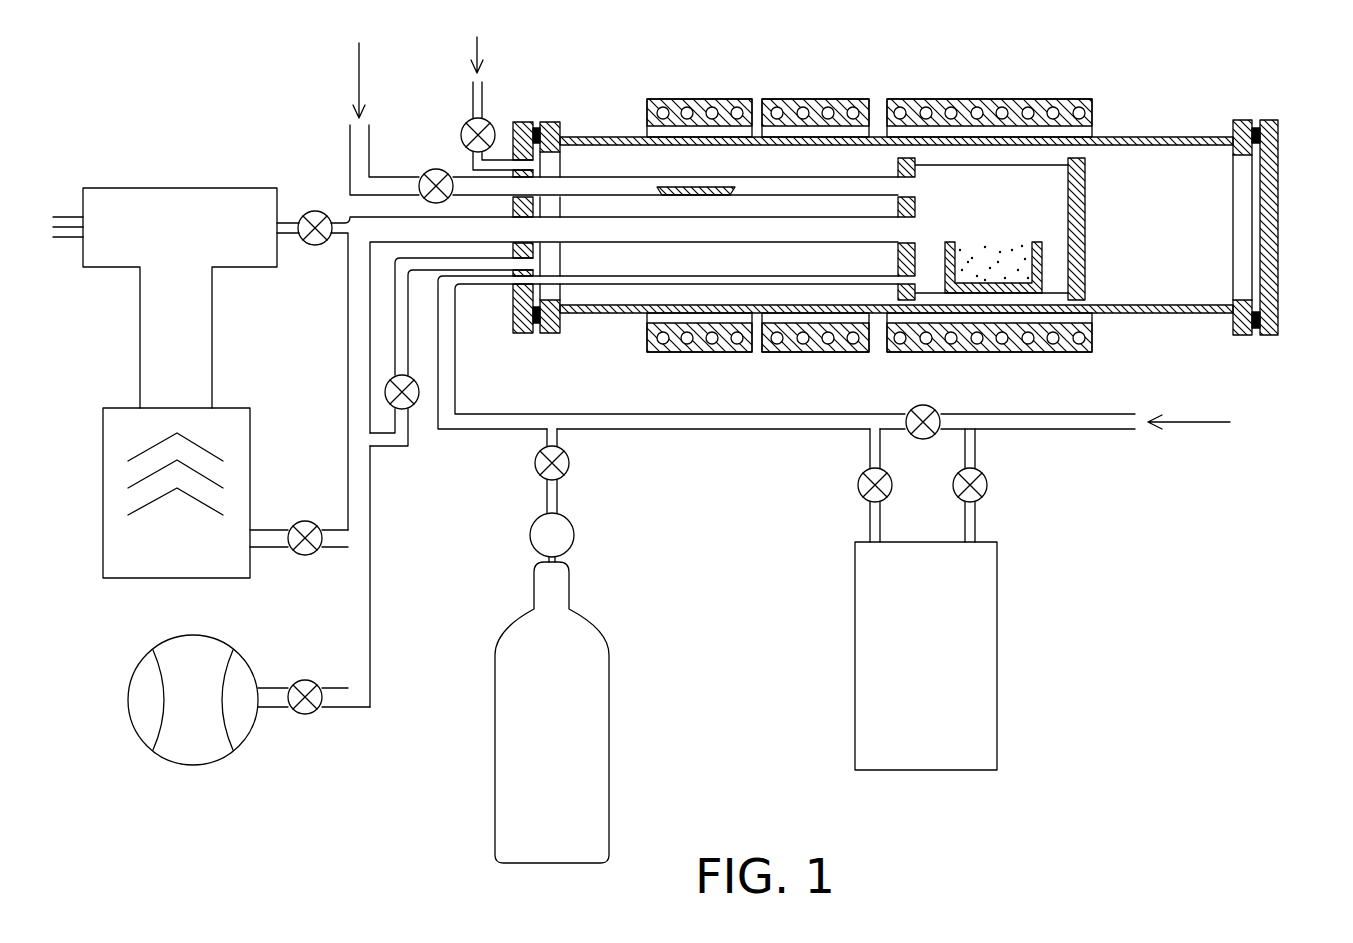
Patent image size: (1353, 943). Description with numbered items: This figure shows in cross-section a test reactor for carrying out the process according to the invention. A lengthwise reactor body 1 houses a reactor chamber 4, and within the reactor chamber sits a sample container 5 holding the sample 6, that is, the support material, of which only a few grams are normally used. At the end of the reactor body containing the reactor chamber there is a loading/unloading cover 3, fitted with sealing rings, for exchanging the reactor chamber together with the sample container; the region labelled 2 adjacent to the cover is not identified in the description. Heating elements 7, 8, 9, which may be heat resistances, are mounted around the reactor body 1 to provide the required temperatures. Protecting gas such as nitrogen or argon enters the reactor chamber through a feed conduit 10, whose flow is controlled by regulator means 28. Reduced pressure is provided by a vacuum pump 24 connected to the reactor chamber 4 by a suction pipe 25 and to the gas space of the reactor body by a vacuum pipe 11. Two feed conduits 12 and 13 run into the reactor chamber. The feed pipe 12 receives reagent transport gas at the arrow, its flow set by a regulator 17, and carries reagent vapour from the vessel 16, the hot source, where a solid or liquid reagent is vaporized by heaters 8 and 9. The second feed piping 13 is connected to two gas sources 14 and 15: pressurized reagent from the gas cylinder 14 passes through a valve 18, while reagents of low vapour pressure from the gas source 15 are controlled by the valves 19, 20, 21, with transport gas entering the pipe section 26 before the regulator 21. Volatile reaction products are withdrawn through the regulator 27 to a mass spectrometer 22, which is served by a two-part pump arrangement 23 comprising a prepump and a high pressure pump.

The reactor body 1 is at (1173, 137).
The tube interior 2 is at (1195, 280).
The loading/unloading cover 3 is at (1285, 215).
The reactor chamber 4 is at (1085, 190).
The sample container 5 is at (950, 243).
The sample 6 is at (992, 255).
The heating element 7 is at (985, 100).
The heating element 8 is at (818, 100).
The heating element 9 is at (703, 100).
The feed conduit 10 is at (485, 105).
The vacuum pipe 11 is at (407, 357).
The feed conduit 12 is at (338, 135).
The feed piping 13 is at (468, 375).
The gas source 14 is at (598, 645).
The gas source 15 is at (1000, 638).
The vessel 16 is at (655, 190).
The regulator 17 is at (427, 170).
The valve 18 is at (574, 463).
The valve 19 is at (858, 487).
The valve 20 is at (990, 481).
The valve 21 is at (915, 405).
The mass spectrometer 22 is at (177, 188).
The two-part pump arrangement 23 is at (240, 415).
The vacuum pump 24 is at (250, 718).
The suction pipe 25 is at (350, 215).
The pipe section 26 is at (1037, 414).
The regulator 27 is at (325, 247).
The regulator means 28 is at (452, 130).